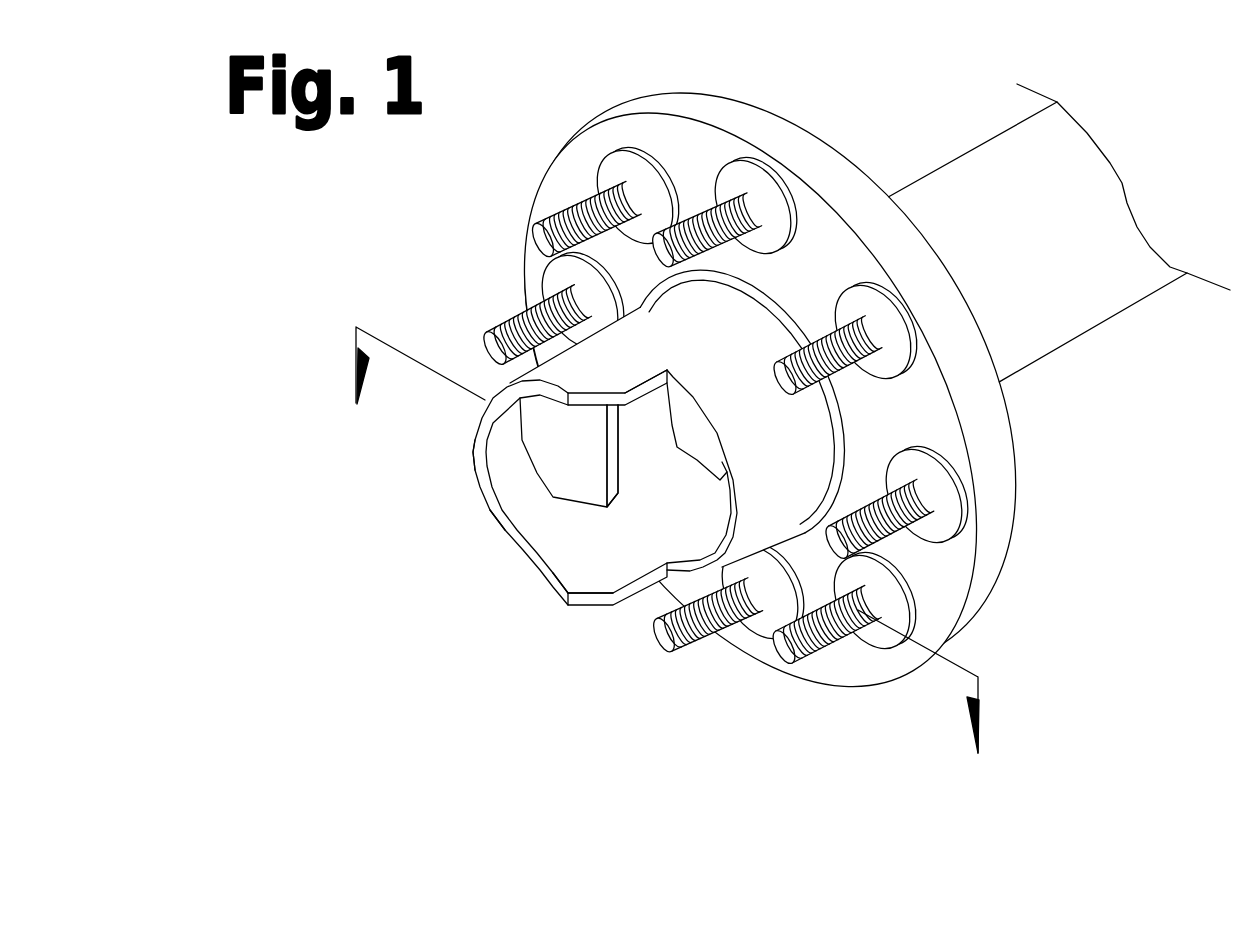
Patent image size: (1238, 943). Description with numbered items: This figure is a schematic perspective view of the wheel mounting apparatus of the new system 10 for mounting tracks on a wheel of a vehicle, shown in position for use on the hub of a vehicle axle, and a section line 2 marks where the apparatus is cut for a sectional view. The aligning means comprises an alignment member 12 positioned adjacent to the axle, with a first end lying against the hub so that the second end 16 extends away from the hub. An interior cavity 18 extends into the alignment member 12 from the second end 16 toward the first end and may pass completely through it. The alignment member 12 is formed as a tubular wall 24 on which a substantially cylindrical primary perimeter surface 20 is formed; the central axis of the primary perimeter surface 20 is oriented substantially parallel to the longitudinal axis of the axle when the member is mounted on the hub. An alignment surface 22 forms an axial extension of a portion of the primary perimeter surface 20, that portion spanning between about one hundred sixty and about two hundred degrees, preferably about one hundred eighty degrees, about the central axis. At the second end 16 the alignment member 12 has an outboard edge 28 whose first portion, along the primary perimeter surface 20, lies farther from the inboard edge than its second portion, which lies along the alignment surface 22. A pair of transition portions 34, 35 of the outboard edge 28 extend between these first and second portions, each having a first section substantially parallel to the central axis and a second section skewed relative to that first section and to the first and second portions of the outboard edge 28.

The section line 2- 2 is at (670, 572).
The system for mounting tracks on a wheel of a vehicle 10 is at (512, 587).
The alignment member 12 is at (568, 553).
The second end 16 is at (493, 525).
The interior cavity 18 is at (630, 527).
The primary perimeter surface 20 is at (785, 453).
The alignment surface 22 is at (520, 313).
The tubular wall 24 is at (731, 645).
The outboard edge 28 is at (470, 462).
The transition portion 34 is at (597, 600).
The transition portion 35 is at (670, 370).